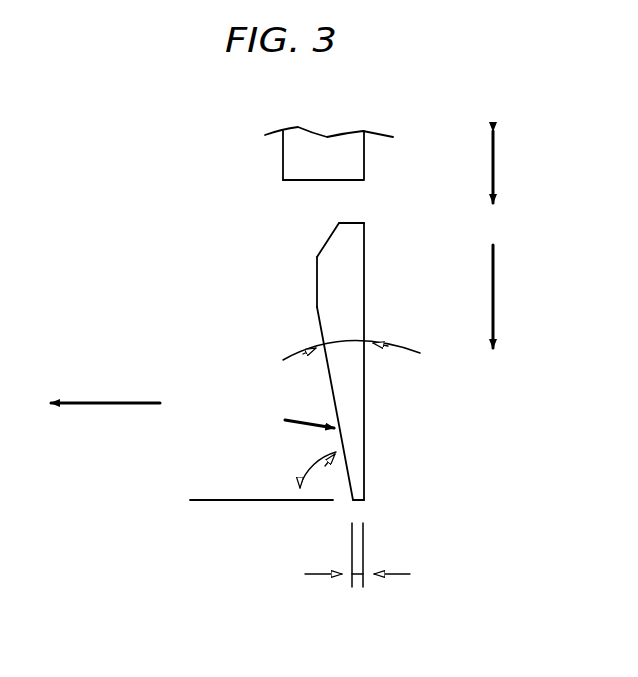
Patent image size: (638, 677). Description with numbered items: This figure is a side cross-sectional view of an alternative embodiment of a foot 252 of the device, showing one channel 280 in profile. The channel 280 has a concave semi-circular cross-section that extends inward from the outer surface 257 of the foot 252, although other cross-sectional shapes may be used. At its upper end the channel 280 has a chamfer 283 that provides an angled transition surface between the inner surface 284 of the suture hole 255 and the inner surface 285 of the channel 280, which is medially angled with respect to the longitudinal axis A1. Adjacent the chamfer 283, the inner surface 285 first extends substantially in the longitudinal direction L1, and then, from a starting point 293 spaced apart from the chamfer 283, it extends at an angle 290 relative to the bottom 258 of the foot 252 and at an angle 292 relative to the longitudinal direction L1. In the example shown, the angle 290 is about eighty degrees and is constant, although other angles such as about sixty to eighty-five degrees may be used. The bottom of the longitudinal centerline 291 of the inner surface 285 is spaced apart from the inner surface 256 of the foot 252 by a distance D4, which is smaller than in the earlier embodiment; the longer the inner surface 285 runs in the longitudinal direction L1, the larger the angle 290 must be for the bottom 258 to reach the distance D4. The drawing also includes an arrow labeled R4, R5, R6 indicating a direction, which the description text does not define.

The foot 252 is at (364, 172).
The suture hole 255 is at (347, 196).
The inner surface of the foot 256 is at (364, 311).
The outer surface of the foot 257 is at (283, 172).
The bottom of the foot 258 is at (356, 500).
The channel 280 is at (291, 423).
The chamfer 283 is at (330, 236).
The inner surface of the suture hole 284 is at (352, 223).
The inner surface of the channel 285 is at (331, 385).
The angle 290 is at (305, 466).
The longitudinal centerline 291 is at (350, 500).
The angle 292 is at (345, 343).
The starting point 293 is at (317, 307).
The distance D4 is at (356, 574).
The longitudinal axis A1 is at (493, 171).
The longitudinal direction L1 is at (493, 295).
The radial direction R4 is at (105, 443).
The radial direction R5 is at (105, 443).
The radial direction R6 is at (118, 405).